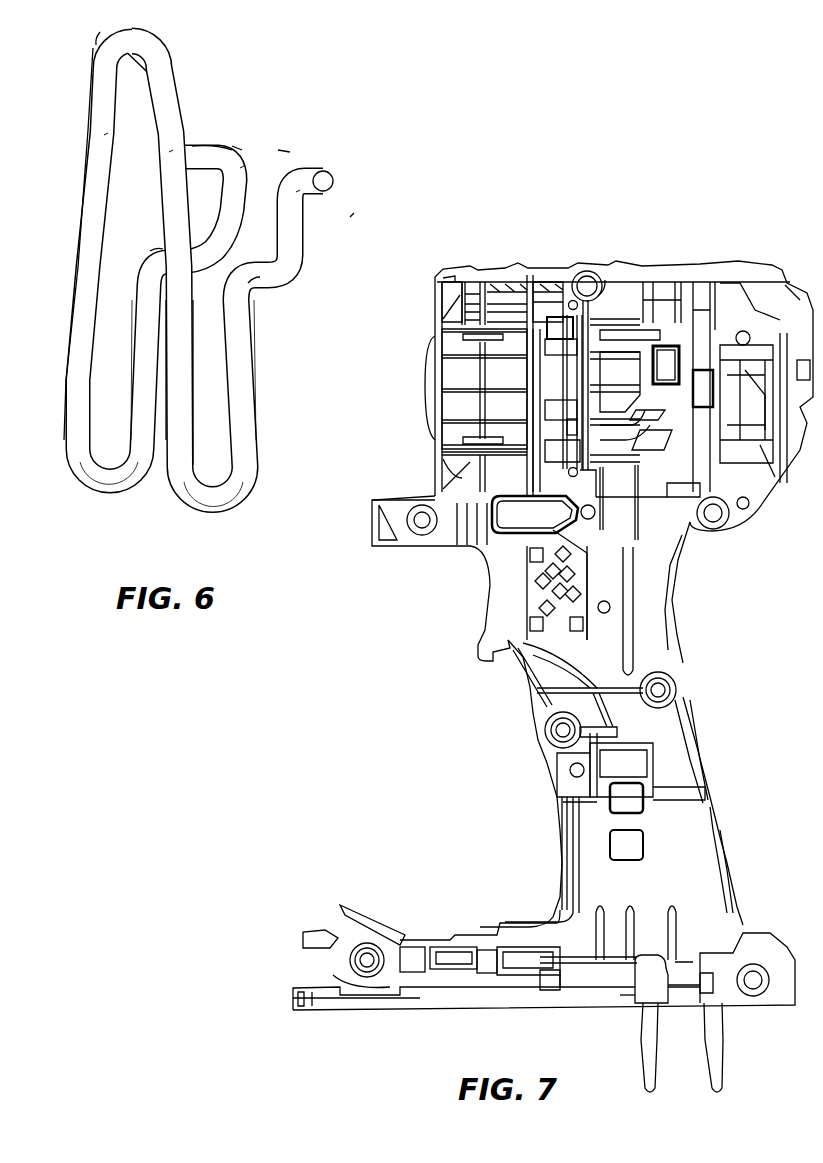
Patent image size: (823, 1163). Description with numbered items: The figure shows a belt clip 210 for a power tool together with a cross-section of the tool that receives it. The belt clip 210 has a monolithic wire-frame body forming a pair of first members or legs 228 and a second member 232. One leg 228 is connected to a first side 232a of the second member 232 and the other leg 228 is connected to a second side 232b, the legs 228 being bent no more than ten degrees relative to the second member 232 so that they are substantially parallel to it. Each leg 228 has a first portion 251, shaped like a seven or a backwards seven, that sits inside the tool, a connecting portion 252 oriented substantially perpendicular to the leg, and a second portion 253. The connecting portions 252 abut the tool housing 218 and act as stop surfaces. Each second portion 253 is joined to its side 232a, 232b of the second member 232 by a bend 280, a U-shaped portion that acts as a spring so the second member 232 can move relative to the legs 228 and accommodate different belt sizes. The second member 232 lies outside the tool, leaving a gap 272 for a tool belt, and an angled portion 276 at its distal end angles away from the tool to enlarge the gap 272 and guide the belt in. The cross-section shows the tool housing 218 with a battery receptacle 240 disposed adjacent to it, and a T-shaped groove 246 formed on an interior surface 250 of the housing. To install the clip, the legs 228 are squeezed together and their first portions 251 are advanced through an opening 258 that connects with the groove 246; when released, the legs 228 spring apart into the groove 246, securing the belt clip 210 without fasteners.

In FIG. 6, the belt clip 210 is at (352, 215).
In FIG. 7, the belt clip 210 is at (716, 1060).
In FIG. 7, the tool housing 218 is at (685, 760).
In FIG. 6, the pair of first members or legs 228 is at (286, 152).
In FIG. 6, the second member 232 is at (77, 64).
In FIG. 6, the first side of the second member 232a is at (78, 318).
In FIG. 6, the second side of the second member 232b is at (173, 470).
In FIG. 7, the battery receptacle 240 is at (388, 1039).
In FIG. 7, the groove 246 is at (663, 990).
In FIG. 7, the interior surface 250 is at (556, 990).
In FIG. 6, the first portion 251 is at (196, 143).
In FIG. 6, the connecting portion 252 is at (157, 250).
In FIG. 6, the second portion 253 is at (142, 378).
In FIG. 7, the opening 258 is at (682, 975).
In FIG. 6, the gap 272 is at (214, 457).
In FIG. 6, the angled portion 276 is at (97, 103).
In FIG. 6, the bend 280 is at (118, 488).